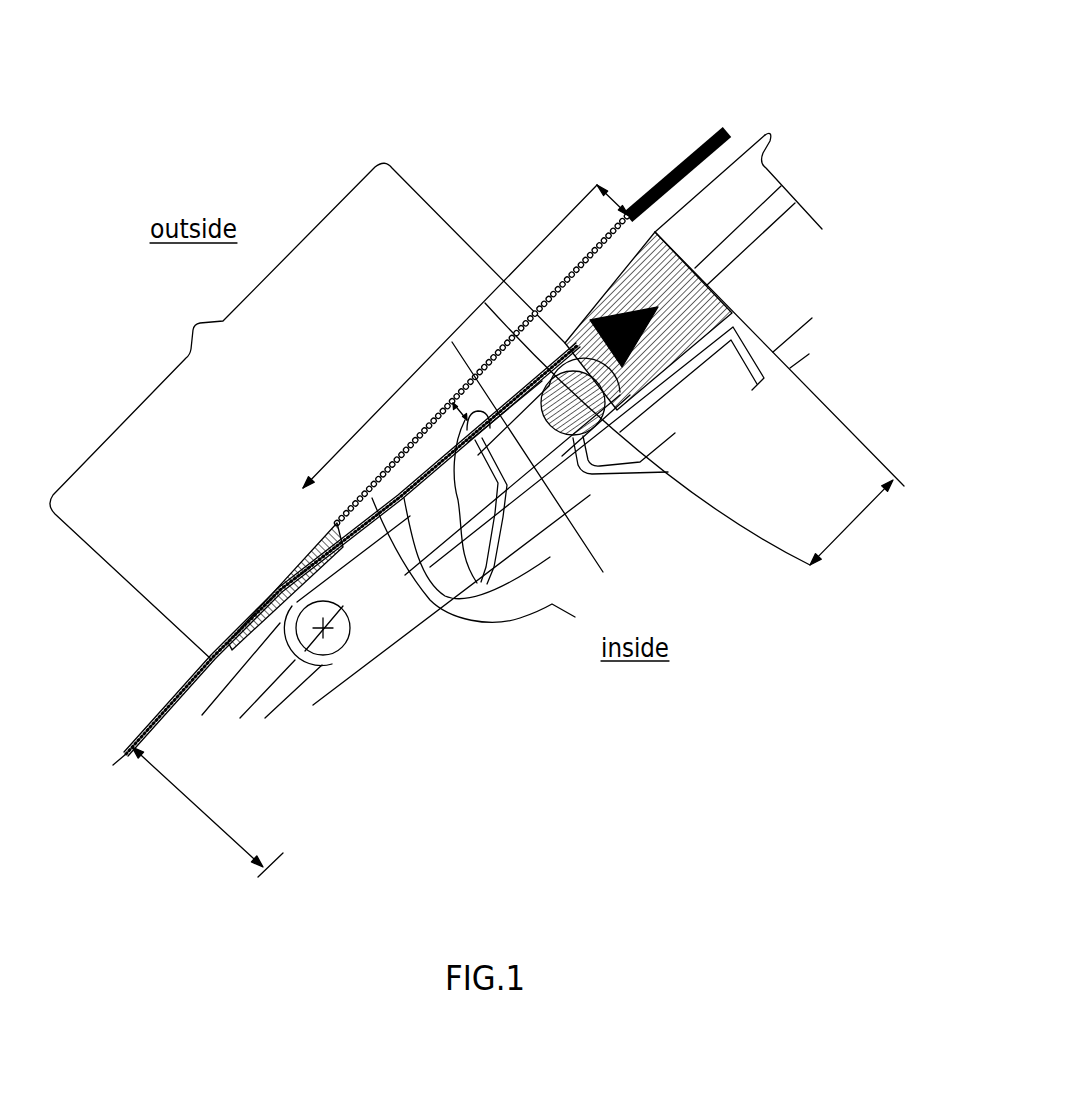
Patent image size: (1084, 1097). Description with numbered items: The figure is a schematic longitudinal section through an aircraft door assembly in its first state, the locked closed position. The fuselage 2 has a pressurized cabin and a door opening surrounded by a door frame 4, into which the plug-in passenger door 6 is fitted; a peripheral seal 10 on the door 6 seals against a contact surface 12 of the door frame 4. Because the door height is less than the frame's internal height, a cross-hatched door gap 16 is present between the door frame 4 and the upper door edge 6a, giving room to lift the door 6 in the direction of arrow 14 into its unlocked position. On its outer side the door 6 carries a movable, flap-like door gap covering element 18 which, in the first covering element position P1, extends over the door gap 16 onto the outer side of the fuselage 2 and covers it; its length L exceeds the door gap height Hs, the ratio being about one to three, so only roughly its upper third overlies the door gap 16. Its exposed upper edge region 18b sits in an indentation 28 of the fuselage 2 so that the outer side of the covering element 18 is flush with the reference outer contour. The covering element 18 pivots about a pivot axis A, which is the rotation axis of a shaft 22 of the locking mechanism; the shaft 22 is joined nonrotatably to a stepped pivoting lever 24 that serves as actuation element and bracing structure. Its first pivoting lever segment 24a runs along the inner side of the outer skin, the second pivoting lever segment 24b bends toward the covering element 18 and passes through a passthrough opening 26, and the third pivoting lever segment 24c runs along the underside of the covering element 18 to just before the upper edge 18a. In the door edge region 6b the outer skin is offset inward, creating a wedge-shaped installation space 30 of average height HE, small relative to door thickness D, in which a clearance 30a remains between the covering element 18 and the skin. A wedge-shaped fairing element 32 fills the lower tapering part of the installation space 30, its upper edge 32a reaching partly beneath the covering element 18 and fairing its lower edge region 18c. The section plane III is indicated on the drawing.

The fuselage 2 is at (668, 204).
The door frame 4 is at (778, 255).
The aircraft door 6 is at (160, 682).
The upper door edge 6a is at (667, 475).
The door edge region 6b is at (307, 411).
The peripheral seal 10 is at (542, 408).
The contact surface 12 is at (590, 455).
The arrow 14 is at (690, 375).
The door gap 16 is at (706, 316).
The door gap covering element 18 is at (493, 329).
The upper edge 18a is at (628, 212).
The upper edge region 18b is at (627, 212).
The lower edge region 18c is at (325, 516).
The shaft 22 is at (385, 608).
The pivoting lever 24 is at (443, 545).
The first pivoting lever segment 24a is at (387, 608).
The second pivoting lever segment 24b is at (437, 517).
The third pivoting lever segment 24c is at (497, 377).
The passthrough opening 26 is at (538, 535).
The indentation 28 is at (613, 243).
The installation space 30 is at (433, 443).
The clearance 30a is at (520, 297).
The fairing element 32 is at (313, 543).
The upper edge 32a is at (500, 625).
The first covering element position P1 is at (641, 186).
The length L is at (383, 410).
The average height HE is at (576, 496).
The thickness D is at (213, 820).
The door gap height Hs is at (850, 520).
The pivot axis A is at (345, 648).
The section III is at (752, 628).